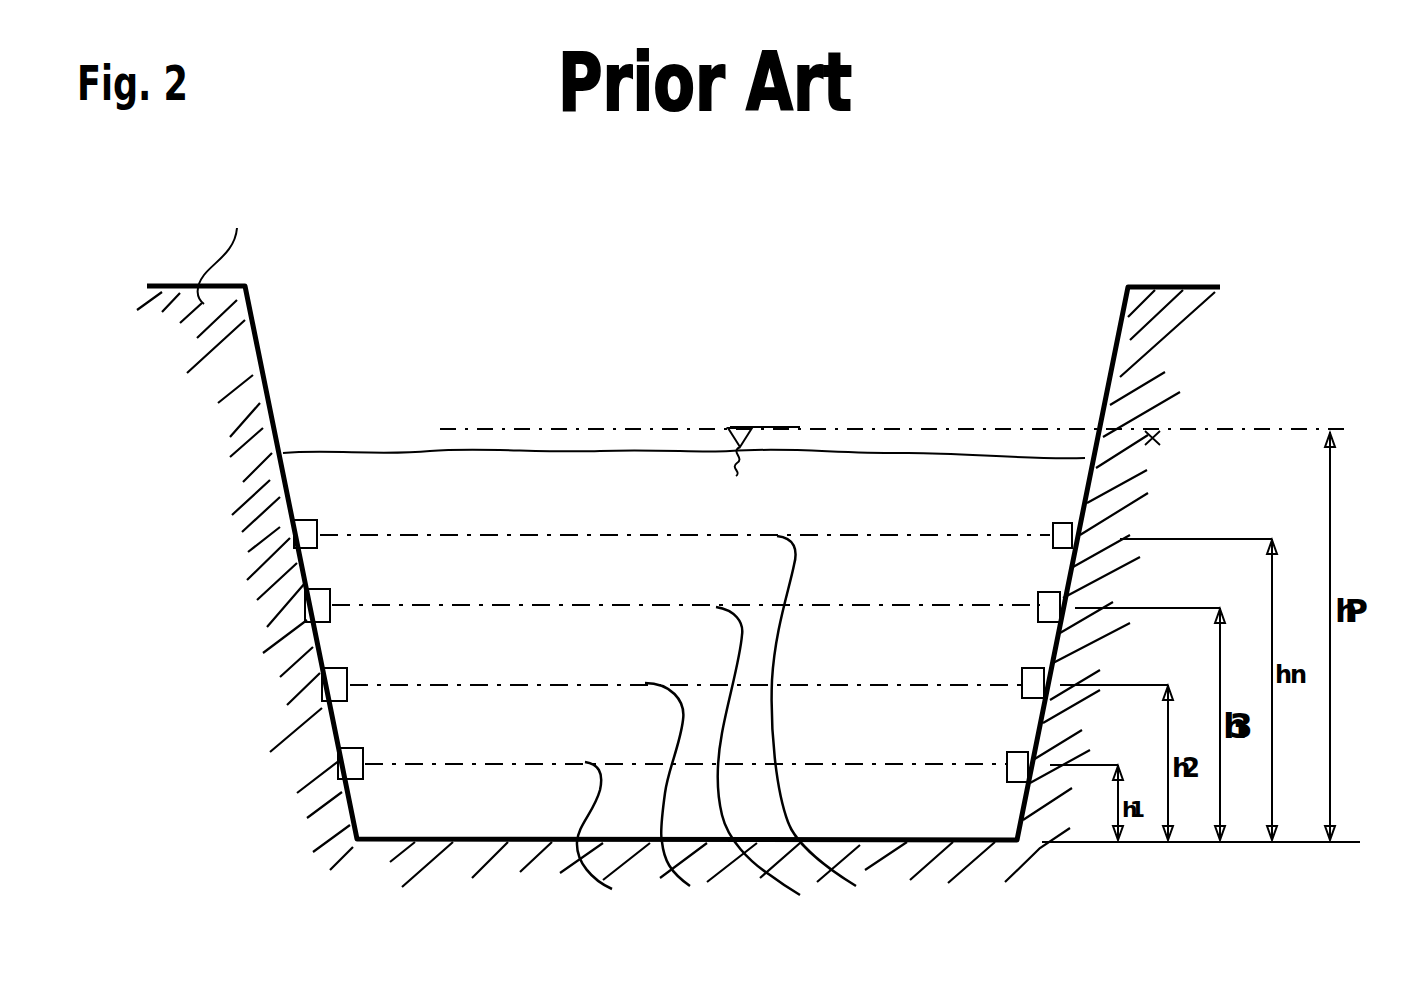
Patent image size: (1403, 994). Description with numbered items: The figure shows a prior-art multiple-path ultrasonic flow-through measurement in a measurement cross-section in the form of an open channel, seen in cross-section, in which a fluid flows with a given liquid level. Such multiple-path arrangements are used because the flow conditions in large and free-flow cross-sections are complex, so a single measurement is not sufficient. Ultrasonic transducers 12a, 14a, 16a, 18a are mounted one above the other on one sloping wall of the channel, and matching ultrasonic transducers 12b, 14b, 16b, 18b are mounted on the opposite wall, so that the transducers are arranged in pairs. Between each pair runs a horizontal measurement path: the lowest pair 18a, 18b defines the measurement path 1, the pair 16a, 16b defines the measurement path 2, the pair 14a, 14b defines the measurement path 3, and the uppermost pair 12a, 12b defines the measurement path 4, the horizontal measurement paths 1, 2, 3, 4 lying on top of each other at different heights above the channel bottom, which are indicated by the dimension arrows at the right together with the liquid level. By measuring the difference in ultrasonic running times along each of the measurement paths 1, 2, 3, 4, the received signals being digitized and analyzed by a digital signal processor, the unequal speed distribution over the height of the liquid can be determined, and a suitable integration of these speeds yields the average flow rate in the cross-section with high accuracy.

The ultrasonic transducer 12a is at (300, 530).
The ultrasonic transducer 14a is at (310, 604).
The ultrasonic transducer 16a is at (326, 684).
The ultrasonic transducer 18a is at (345, 760).
The ultrasonic transducer 12b is at (1058, 524).
The ultrasonic transducer 14b is at (1045, 596).
The ultrasonic transducer 16b is at (1030, 676).
The ultrasonic transducer 18b is at (1016, 756).
The measurement path 1 is at (594, 845).
The measurement path 2 is at (667, 805).
The measurement path 3 is at (758, 767).
The measurement path 4 is at (820, 732).